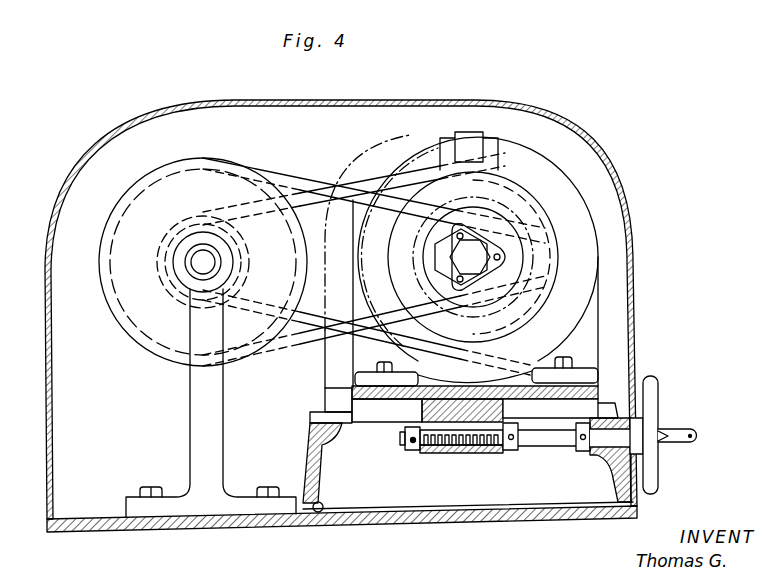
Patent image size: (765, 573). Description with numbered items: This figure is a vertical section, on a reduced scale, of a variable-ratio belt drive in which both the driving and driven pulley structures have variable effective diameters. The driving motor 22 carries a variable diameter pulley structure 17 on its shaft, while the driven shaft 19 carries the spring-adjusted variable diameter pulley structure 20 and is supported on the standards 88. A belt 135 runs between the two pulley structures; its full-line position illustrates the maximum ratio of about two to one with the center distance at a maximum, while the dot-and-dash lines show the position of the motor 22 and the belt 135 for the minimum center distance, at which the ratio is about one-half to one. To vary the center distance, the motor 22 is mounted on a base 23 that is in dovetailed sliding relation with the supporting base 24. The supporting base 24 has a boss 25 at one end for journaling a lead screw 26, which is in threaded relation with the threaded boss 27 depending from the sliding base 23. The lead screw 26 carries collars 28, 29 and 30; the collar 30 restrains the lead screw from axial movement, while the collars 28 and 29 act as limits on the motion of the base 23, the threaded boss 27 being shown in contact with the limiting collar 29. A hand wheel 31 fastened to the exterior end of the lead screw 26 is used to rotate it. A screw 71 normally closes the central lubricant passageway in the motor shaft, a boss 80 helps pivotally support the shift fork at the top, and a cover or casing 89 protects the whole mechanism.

The cover or casing 89 is at (230, 100).
The standards 88 is at (192, 416).
The variable diameter pulley structure 20 is at (134, 329).
The driven shaft 19 is at (198, 258).
The belt 135 is at (379, 192).
The motor 22 is at (548, 172).
The variable diameter pulley structure 17 is at (539, 302).
The screw 71 is at (480, 238).
The boss 80 is at (466, 137).
The base 23 is at (598, 386).
The supporting base 24 is at (318, 512).
The collar 28 is at (406, 447).
The threaded boss 27 is at (455, 456).
The collar 29 is at (500, 457).
The lead screw 26 is at (538, 444).
The collar 30 is at (581, 453).
The boss 25 is at (598, 456).
The hand wheel 31 is at (655, 394).